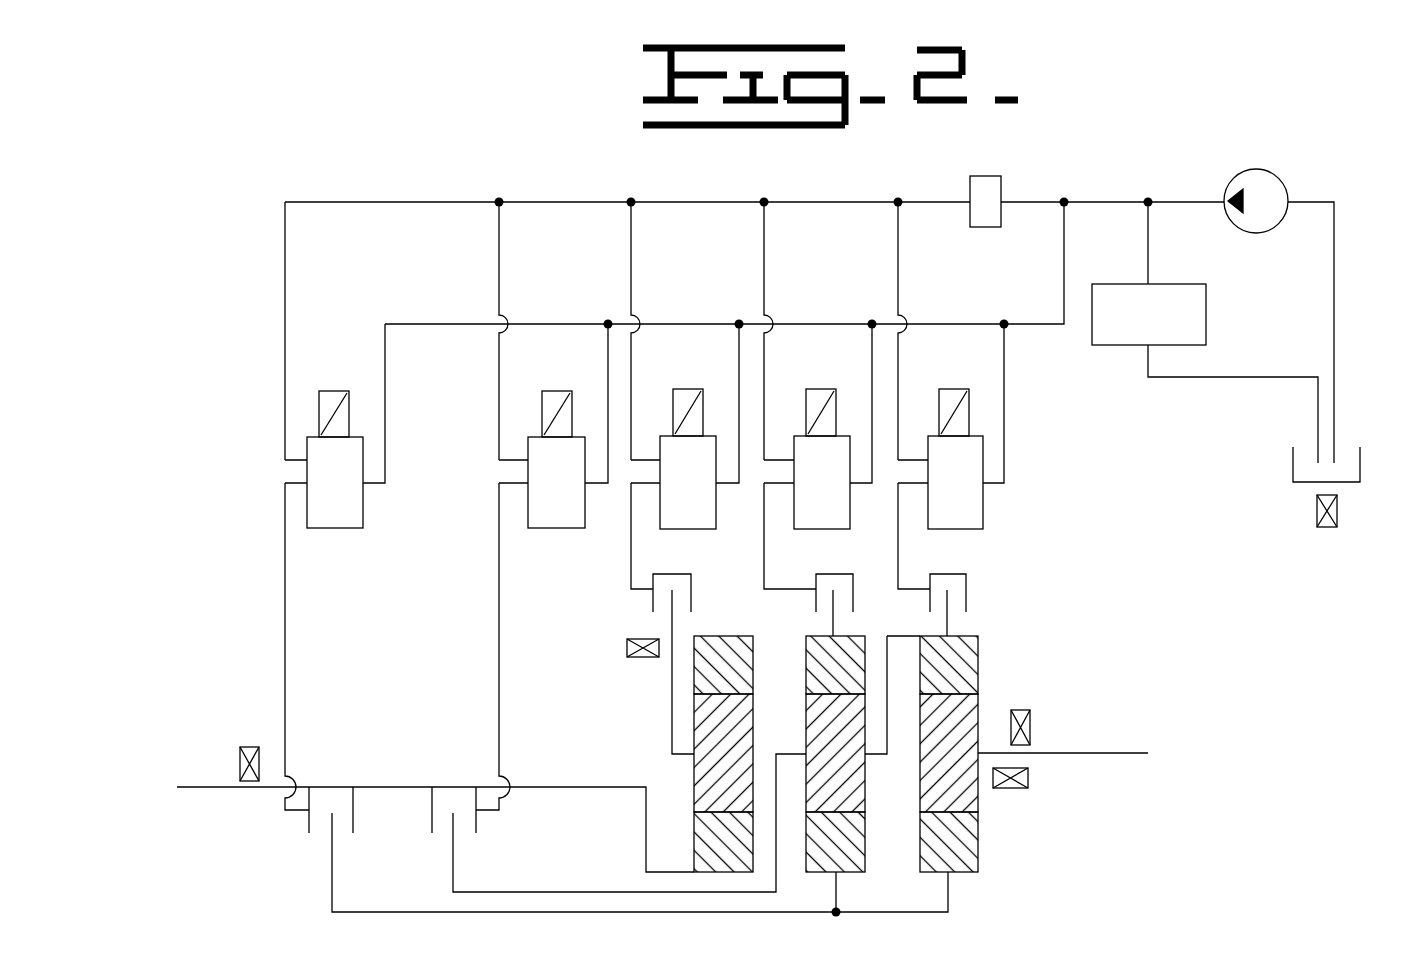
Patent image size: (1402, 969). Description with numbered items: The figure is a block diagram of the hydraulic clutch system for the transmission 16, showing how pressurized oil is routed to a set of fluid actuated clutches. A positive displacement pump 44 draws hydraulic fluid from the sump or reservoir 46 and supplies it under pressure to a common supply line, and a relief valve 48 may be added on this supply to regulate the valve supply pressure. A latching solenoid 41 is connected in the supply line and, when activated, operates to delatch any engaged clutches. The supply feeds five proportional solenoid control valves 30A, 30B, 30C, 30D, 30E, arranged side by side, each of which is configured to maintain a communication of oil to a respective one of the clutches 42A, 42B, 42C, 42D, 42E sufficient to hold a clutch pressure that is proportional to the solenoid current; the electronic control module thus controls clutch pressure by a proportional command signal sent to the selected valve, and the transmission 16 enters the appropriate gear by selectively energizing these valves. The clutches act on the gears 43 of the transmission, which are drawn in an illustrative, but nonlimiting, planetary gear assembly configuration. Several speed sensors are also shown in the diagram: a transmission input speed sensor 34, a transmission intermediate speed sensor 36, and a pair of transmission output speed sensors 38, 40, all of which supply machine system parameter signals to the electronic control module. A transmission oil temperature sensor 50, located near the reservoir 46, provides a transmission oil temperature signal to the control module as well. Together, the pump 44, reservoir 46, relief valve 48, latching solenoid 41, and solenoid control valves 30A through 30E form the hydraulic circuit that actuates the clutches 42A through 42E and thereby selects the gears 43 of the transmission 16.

The transmission 16 is at (366, 309).
The solenoid control valve 30A is at (363, 503).
The solenoid control valve 30B is at (570, 529).
The solenoid control valve 30C is at (683, 529).
The solenoid control valve 30D is at (810, 529).
The solenoid control valve 30E is at (955, 529).
The transmission input speed sensor 34 is at (240, 760).
The transmission intermediate speed sensor 36 is at (640, 657).
The transmission output speed sensor 38 is at (1030, 723).
The transmission output speed sensor 40 is at (1028, 778).
The latching solenoid 41 is at (1001, 185).
The clutch 42A is at (318, 787).
The clutch 42B is at (455, 786).
The clutch 42C is at (691, 590).
The clutch 42D is at (853, 600).
The clutch 42E is at (966, 590).
The gears 43 is at (1081, 625).
The positive displacement pump 44 is at (1286, 180).
The reservoir 46 is at (1293, 458).
The relief valve 48 is at (1207, 318).
The transmission oil temperature sensor 50 is at (1317, 507).